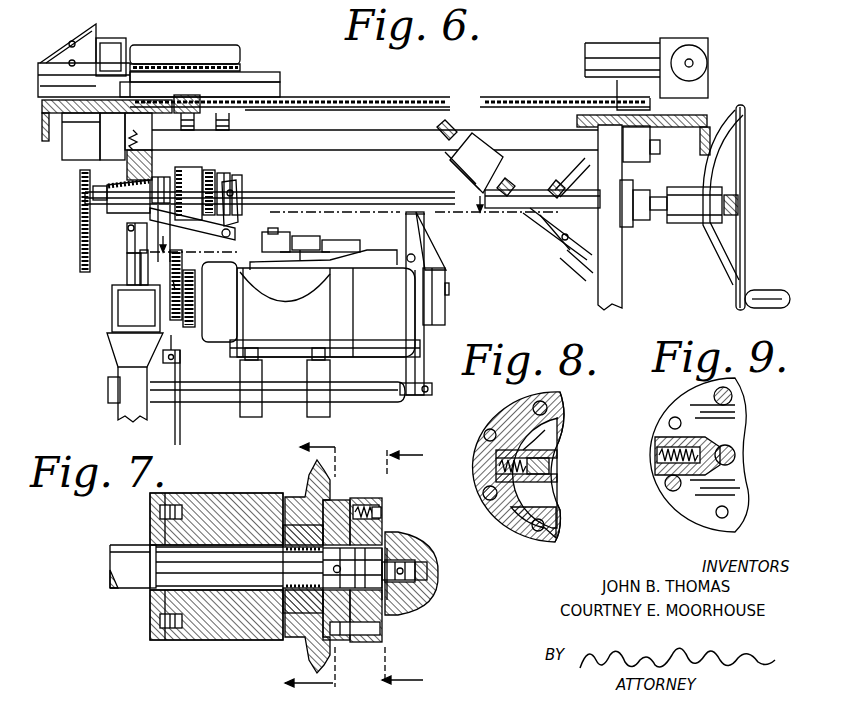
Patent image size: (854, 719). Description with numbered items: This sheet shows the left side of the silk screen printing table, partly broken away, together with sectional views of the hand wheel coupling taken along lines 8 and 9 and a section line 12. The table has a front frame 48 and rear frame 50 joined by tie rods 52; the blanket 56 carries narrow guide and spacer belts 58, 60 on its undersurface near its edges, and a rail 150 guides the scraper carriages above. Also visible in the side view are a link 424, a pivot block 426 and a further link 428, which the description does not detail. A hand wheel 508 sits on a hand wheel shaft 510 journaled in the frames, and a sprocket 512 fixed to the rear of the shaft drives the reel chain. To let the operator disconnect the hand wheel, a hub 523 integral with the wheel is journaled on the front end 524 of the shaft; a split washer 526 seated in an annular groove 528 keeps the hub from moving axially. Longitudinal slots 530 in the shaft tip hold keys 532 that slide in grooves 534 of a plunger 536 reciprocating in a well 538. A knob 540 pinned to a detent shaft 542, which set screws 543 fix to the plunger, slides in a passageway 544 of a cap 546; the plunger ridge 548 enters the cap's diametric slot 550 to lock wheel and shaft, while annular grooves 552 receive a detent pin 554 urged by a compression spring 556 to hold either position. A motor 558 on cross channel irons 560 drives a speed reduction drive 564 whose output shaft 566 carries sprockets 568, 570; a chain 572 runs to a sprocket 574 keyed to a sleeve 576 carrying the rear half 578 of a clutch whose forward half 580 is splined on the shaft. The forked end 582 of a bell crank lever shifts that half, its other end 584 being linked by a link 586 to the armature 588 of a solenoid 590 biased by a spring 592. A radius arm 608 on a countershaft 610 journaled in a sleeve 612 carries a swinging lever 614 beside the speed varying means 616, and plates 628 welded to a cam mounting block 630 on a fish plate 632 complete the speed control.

In FIG. 6, the section line 12— 12 is at (355, 235).
In FIG. 6, the front frame 48 is at (617, 268).
In FIG. 6, the rear frame 50 is at (112, 168).
In FIG. 6, the tie rods 52 is at (397, 400).
In FIG. 6, the blanket 56 is at (343, 97).
In FIG. 6, the guide and spacer belt 58 is at (548, 100).
In FIG. 6, the guide and spacer belt 60 is at (180, 95).
In FIG. 6, the rail 150 is at (596, 60).
In FIG. 6, the link 424 is at (547, 230).
In FIG. 6, the pivot block 426 is at (512, 165).
In FIG. 6, the link 428 is at (580, 255).
In FIG. 6, the hand wheel 508 is at (740, 145).
In FIG. 6, the hand wheel shaft 510 is at (305, 192).
In FIG. 7, the hand wheel shaft 510 is at (120, 553).
In FIG. 6, the sprocket 512 is at (78, 185).
In FIG. 6, the hub 523 is at (680, 197).
In FIG. 7, the hub 523 is at (233, 500).
In FIG. 8, the hub 523 is at (493, 412).
In FIG. 7, the front end of the shaft 524 is at (216, 519).
In FIG. 7, the split washer 526 is at (152, 533).
In FIG. 7, the annular groove 528 is at (150, 573).
In FIG. 7, the longitudinal slots 530 is at (312, 547).
In FIG. 7, the keys 532 is at (300, 495).
In FIG. 7, the grooves 534 is at (277, 602).
In FIG. 7, the plunger 536 is at (292, 627).
In FIG. 8, the plunger 536 is at (528, 500).
In FIG. 7, the well 538 is at (328, 508).
In FIG. 8, the well 538 is at (543, 502).
In FIG. 6, the knob 540 is at (738, 202).
In FIG. 7, the knob 540 is at (418, 540).
In FIG. 7, the detent shaft 542 is at (443, 597).
In FIG. 8, the detent shaft 542 is at (553, 473).
In FIG. 9, the detent shaft 542 is at (737, 458).
In FIG. 8, the set screws 543 is at (523, 450).
In FIG. 7, the passageway 544 is at (378, 558).
In FIG. 7, the cap 546 is at (383, 533).
In FIG. 9, the cap 546 is at (697, 398).
In FIG. 7, the ridge 548 is at (363, 500).
In FIG. 8, the ridge 548 is at (553, 457).
In FIG. 7, the diametric slot 550 is at (383, 622).
In FIG. 7, the annular grooves 552 is at (398, 598).
In FIG. 9, the detent pin 554 is at (667, 488).
In FIG. 9, the compression spring 556 is at (656, 442).
In FIG. 6, the motor 558 is at (308, 309).
In FIG. 6, the cross channel irons 560 is at (240, 374).
In FIG. 6, the speed reduction drive 564 is at (343, 287).
In FIG. 6, the output shaft 566 is at (194, 294).
In FIG. 6, the inner sprocket 568 is at (197, 317).
In FIG. 6, the sprocket 570 is at (173, 300).
In FIG. 6, the chain 572 is at (173, 280).
In FIG. 6, the sprocket 574 is at (182, 175).
In FIG. 6, the sleeve 576 is at (160, 177).
In FIG. 6, the rear half of clutch 578 is at (209, 172).
In FIG. 6, the forward half of clutch 580 is at (228, 175).
In FIG. 6, the forked end of bell crank lever 582 is at (240, 185).
In FIG. 6, the other end of bell crank lever 584 is at (127, 226).
In FIG. 6, the link 586 is at (122, 240).
In FIG. 6, the armature 588 is at (137, 272).
In FIG. 6, the solenoid 590 is at (117, 322).
In FIG. 6, the spring 592 is at (128, 152).
In FIG. 6, the radius arm 608 is at (176, 422).
In FIG. 6, the countershaft 610 is at (171, 338).
In FIG. 6, the sleeve 612 is at (403, 363).
In FIG. 6, the swinging lever 614 is at (423, 250).
In FIG. 6, the means for varying the speed ratio 616 is at (398, 212).
In FIG. 6, the plates 628 is at (403, 216).
In FIG. 6, the cam mounting block 630 is at (443, 267).
In FIG. 6, the fish plate 632 is at (449, 288).
In FIG. 7, the section line 8— 8 is at (301, 566).
In FIG. 7, the section line 9— 9 is at (409, 570).